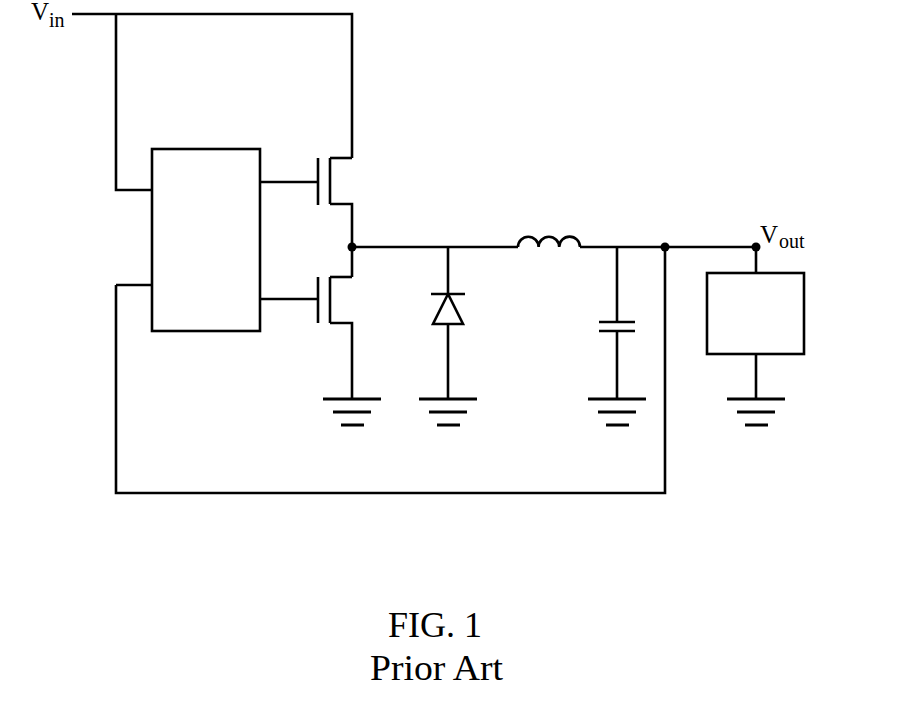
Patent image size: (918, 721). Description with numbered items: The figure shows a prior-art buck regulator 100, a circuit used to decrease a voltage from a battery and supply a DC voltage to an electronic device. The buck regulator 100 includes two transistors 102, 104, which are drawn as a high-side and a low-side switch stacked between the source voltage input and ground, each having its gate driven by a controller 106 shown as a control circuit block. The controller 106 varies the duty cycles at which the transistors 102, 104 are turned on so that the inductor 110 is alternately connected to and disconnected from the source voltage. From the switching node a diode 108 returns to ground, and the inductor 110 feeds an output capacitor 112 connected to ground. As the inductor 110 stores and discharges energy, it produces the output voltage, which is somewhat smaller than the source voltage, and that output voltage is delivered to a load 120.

The buck regulator 100 is at (673, 128).
The transistor 102 is at (340, 203).
The transistor 104 is at (340, 322).
The controller 106 is at (221, 148).
The diode 108 is at (451, 293).
The inductor 110 is at (549, 233).
The capacitor 112 is at (612, 321).
The load 120 is at (805, 284).